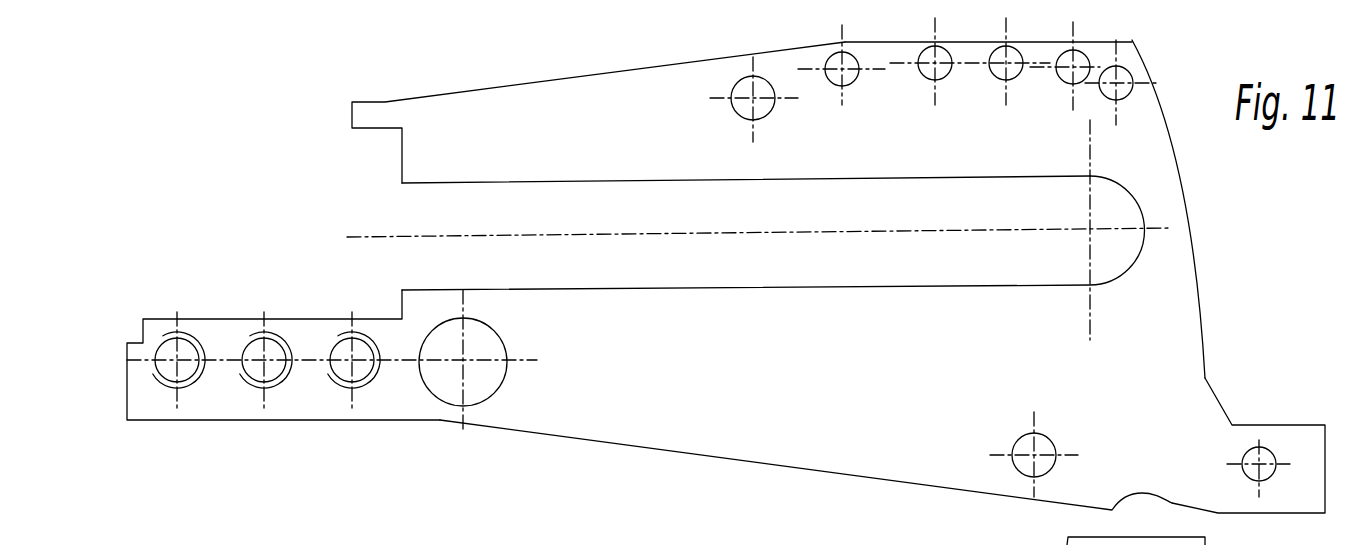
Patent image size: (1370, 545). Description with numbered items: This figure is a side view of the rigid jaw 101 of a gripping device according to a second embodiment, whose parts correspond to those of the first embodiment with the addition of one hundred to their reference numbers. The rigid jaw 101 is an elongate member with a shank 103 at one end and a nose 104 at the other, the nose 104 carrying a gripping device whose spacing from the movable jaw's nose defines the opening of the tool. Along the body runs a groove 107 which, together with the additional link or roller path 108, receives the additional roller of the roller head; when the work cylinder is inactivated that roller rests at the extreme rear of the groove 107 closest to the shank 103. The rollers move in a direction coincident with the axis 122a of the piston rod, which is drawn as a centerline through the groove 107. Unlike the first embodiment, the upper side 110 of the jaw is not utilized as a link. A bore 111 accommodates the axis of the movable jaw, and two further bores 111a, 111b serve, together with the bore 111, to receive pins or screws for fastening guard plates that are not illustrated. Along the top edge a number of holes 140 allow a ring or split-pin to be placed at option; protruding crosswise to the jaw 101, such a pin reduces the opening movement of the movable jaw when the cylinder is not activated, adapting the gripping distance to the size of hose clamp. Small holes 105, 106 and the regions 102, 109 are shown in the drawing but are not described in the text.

The rigid jaw 101 is at (318, 92).
The lower arm 102 is at (595, 405).
The shank 103 is at (217, 393).
The nose 104 is at (1308, 442).
The tab hole 105 is at (1253, 447).
The mounting holes 106 is at (352, 348).
The groove 107 is at (612, 220).
The additional link or roller path 108 is at (565, 183).
The upper arm 109 is at (512, 122).
The upper side 110 is at (1113, 36).
The bore 111 is at (480, 388).
The bore 111a is at (1027, 470).
The bore 111b is at (742, 88).
The axis of the piston rod 122a is at (395, 237).
The holes 140 is at (1127, 95).